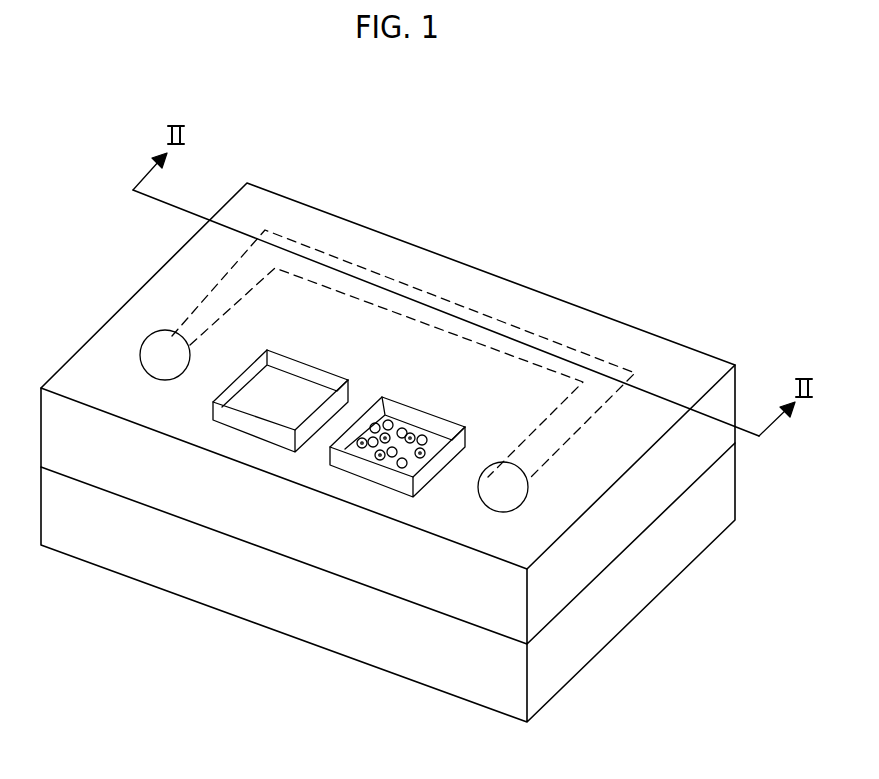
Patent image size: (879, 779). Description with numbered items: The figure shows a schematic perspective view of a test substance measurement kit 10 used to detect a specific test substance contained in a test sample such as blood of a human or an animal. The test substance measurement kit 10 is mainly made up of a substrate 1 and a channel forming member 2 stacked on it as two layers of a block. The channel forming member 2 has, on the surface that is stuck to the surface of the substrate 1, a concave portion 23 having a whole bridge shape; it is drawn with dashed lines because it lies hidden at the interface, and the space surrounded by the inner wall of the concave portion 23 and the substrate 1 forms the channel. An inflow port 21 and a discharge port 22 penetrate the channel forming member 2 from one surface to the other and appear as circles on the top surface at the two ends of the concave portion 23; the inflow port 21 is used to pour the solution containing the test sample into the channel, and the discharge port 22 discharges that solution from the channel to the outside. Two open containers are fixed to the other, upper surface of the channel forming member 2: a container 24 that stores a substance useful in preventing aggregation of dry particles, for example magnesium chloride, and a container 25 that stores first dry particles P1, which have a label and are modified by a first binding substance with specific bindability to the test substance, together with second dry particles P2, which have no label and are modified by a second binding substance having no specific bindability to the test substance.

The test substance measurement kit 10 is at (541, 158).
The substrate 1 is at (553, 663).
The channel forming member 2 is at (438, 593).
The inflow port 21 is at (503, 487).
The discharge port 22 is at (165, 355).
The concave portion 23 is at (586, 354).
The container 24 is at (213, 418).
The container 25 is at (330, 455).
The first dry particles P1 is at (388, 420).
The second dry particles P2 is at (412, 433).